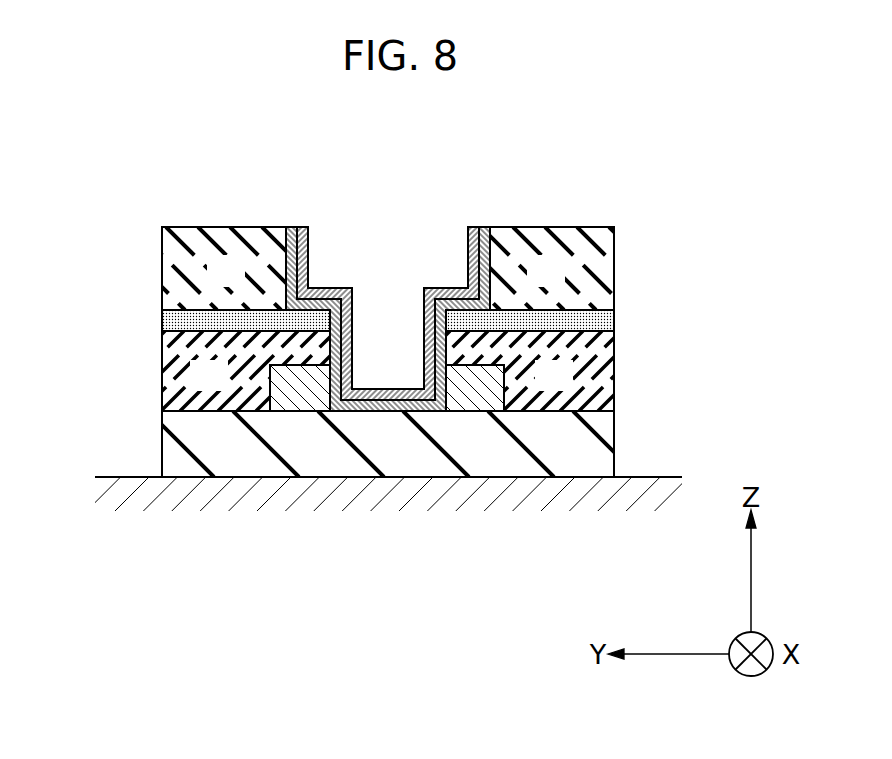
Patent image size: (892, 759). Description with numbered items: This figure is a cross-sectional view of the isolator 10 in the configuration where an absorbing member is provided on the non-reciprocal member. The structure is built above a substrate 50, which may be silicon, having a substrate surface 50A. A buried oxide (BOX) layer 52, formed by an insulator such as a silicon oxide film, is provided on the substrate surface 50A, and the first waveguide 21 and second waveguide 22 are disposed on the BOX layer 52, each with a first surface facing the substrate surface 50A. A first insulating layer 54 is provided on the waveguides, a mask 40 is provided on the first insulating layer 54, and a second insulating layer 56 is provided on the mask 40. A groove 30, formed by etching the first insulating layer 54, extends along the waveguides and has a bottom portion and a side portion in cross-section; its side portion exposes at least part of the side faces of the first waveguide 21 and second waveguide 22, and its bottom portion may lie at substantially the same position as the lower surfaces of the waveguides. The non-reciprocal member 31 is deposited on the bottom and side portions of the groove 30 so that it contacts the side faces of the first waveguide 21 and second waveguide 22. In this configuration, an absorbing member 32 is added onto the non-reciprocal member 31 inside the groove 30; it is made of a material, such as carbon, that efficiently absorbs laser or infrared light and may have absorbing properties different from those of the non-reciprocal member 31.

The isolator 10 is at (457, 161).
The first waveguide 21 is at (300, 397).
The second waveguide 22 is at (480, 397).
The groove 30 is at (373, 368).
The non-reciprocal member 31 is at (378, 412).
The absorbing member 32 is at (442, 288).
The mask 40 is at (173, 321).
The substrate 50 is at (136, 498).
The substrate surface 50A is at (130, 477).
The buried oxide (BOX) layer 52 is at (556, 453).
The first insulating layer 54 is at (195, 387).
The second insulating layer 56 is at (212, 283).